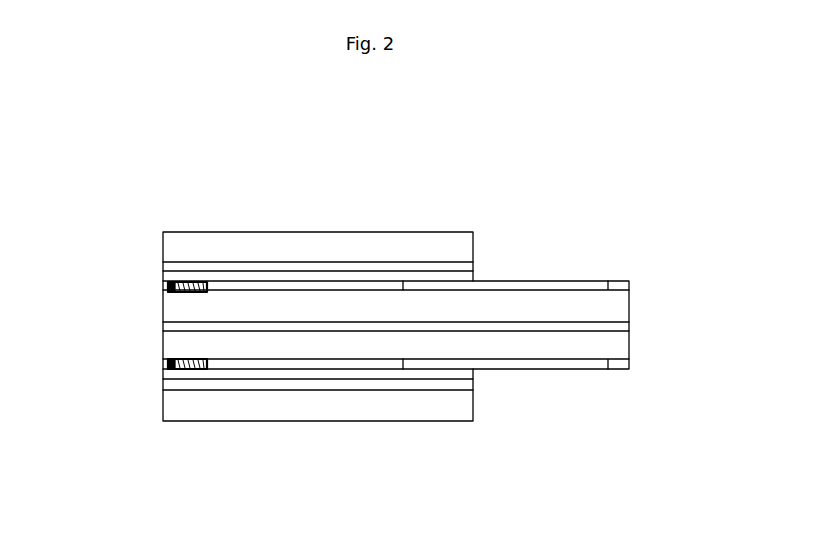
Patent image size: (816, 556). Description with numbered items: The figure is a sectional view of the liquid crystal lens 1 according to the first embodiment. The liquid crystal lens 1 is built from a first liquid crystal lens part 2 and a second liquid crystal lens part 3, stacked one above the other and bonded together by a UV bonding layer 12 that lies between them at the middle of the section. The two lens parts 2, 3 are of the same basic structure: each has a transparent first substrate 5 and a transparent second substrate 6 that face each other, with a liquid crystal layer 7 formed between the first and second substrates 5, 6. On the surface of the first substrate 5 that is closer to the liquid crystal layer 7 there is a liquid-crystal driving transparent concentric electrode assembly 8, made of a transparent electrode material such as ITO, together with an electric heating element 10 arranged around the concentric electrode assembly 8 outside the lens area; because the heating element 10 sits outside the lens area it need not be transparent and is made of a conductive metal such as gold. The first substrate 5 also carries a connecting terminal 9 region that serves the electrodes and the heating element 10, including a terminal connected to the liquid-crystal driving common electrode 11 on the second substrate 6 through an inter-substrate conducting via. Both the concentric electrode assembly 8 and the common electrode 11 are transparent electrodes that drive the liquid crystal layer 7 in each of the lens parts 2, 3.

The liquid crystal lens 1 is at (504, 270).
The first liquid crystal lens part 2 is at (130, 235).
The second liquid crystal lens part 3 is at (130, 333).
The first substrate 5 is at (520, 303).
The second substrate 6 is at (400, 247).
The liquid crystal layer 7 is at (265, 276).
The liquid-crystal driving transparent concentric electrode assembly 8 is at (337, 287).
The connecting terminal 9 is at (582, 287).
The electric heating element 10 is at (193, 282).
The liquid-crystal driving common electrode 11 is at (182, 270).
The UV bonding layer 12 is at (615, 326).